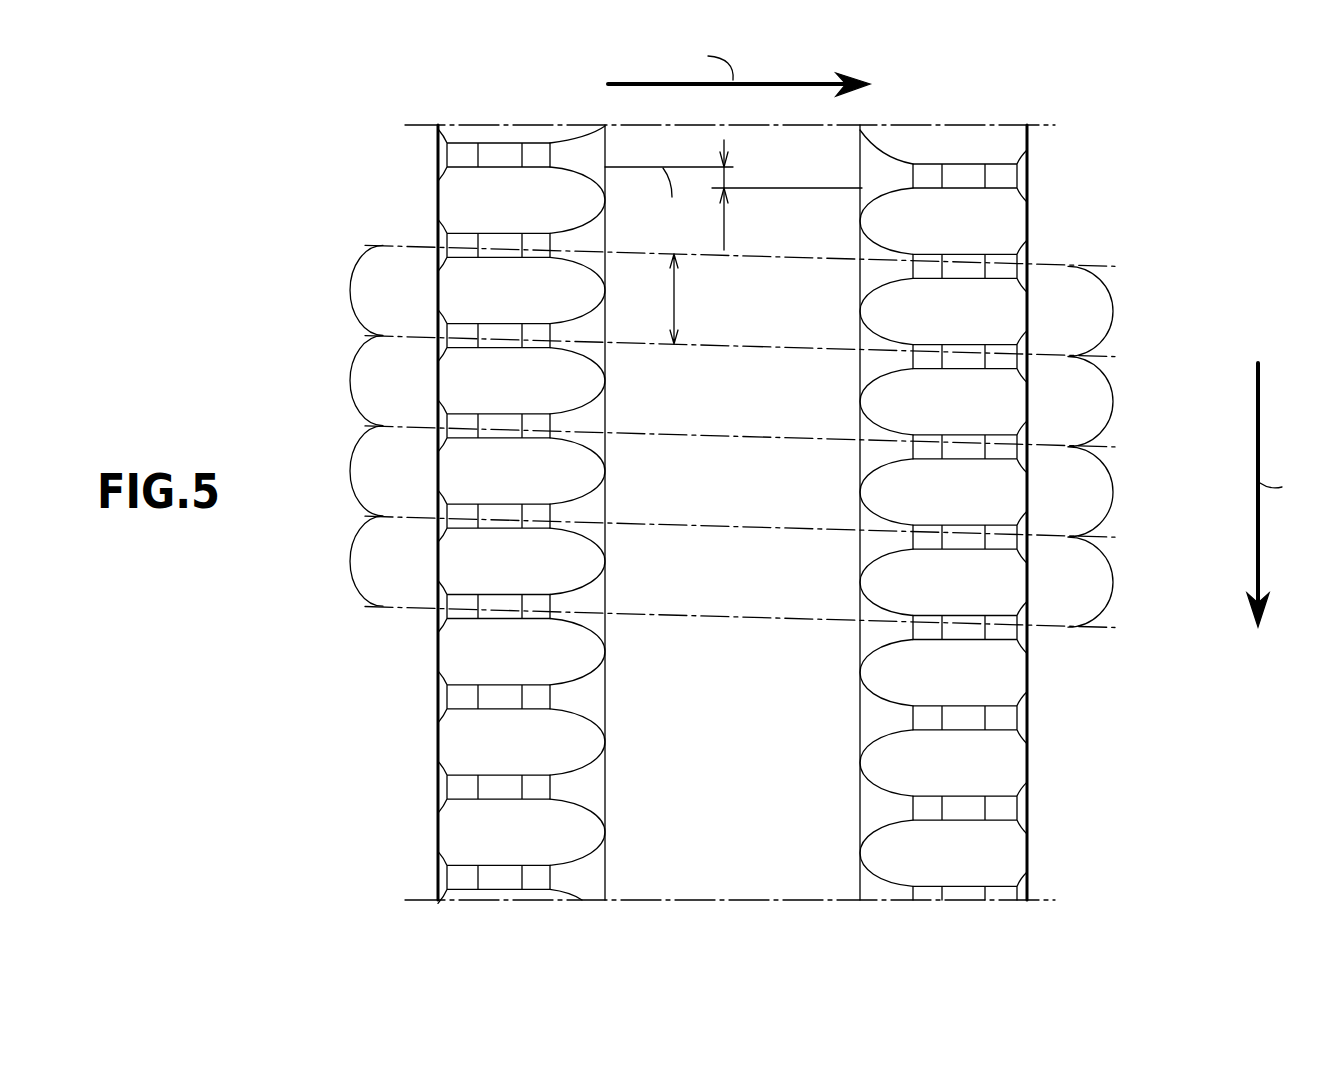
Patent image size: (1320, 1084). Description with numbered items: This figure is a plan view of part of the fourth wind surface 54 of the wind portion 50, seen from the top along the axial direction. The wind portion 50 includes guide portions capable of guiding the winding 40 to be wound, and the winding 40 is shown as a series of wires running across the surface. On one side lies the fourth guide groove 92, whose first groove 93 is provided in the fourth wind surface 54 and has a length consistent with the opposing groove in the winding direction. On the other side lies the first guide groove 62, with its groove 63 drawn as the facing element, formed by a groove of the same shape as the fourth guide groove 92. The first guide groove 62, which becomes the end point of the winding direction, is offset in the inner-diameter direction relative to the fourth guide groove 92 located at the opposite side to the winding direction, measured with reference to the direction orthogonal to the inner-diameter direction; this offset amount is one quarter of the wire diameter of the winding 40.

The wind portion 50 is at (250, 157).
The fourth wind surface 54 is at (736, 862).
The fourth guide groove 92 is at (425, 480).
The first groove 93 is at (483, 132).
The first guide groove 62 is at (1040, 485).
The second louver 63 is at (982, 140).
The winding 40 is at (783, 347).